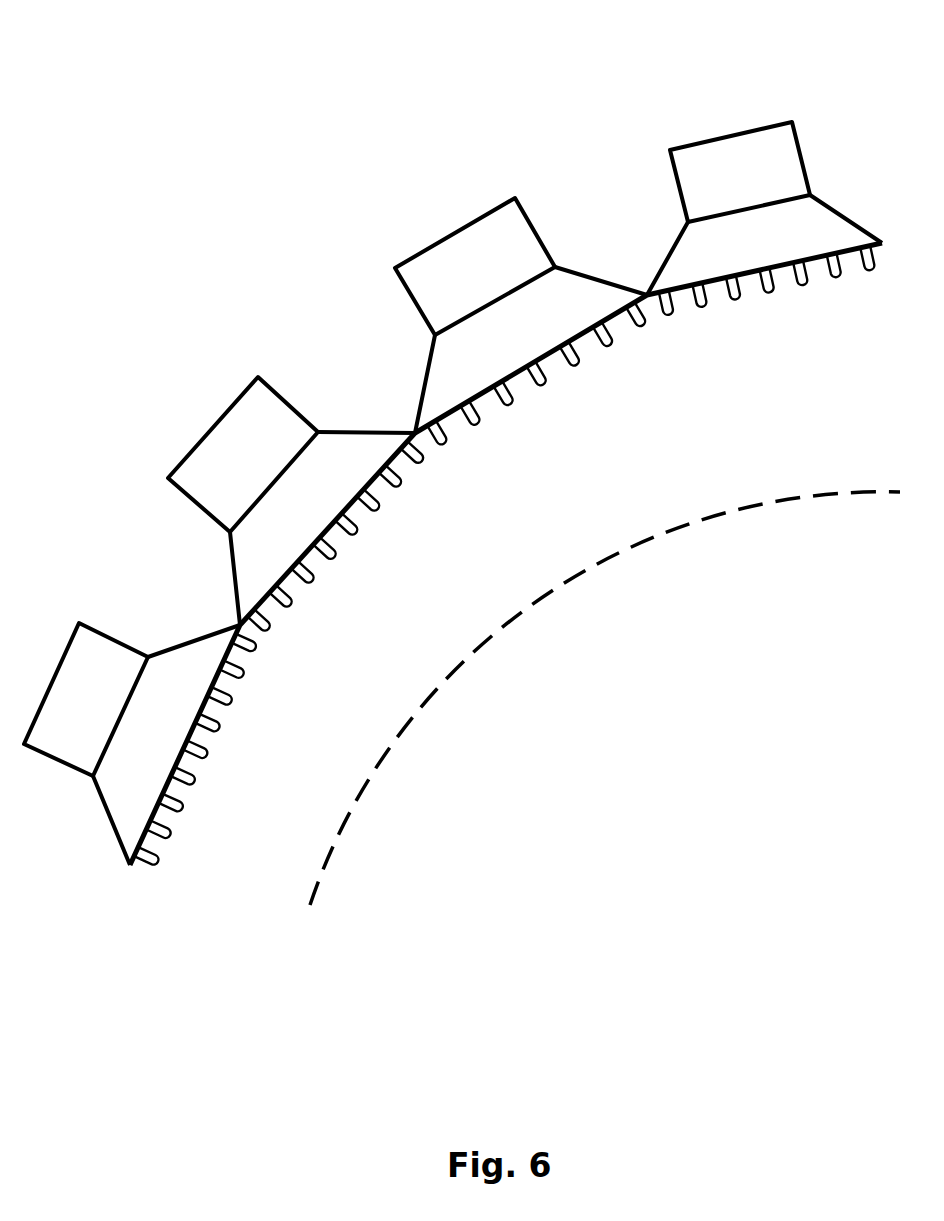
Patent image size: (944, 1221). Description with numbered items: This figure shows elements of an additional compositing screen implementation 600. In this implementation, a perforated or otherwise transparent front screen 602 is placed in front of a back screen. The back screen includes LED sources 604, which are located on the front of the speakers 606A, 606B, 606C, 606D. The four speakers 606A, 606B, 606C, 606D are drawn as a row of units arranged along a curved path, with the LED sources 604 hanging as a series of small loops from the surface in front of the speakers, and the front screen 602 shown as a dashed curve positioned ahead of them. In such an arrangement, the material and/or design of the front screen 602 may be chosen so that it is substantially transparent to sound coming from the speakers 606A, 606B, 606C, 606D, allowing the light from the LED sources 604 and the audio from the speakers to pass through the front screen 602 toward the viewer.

The compositing screen implementation 600 is at (170, 113).
The front screen 602 is at (648, 575).
The LED sources 604 is at (702, 333).
The speaker 606A is at (110, 624).
The speaker 606B is at (246, 362).
The speaker 606C is at (452, 214).
The speaker 606D is at (728, 122).